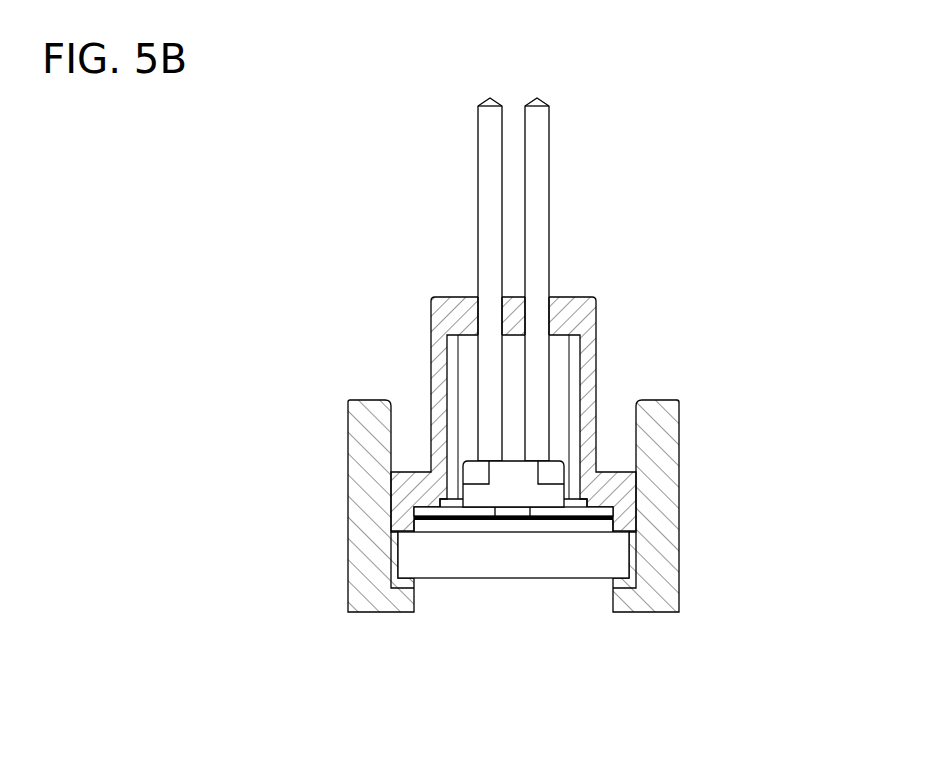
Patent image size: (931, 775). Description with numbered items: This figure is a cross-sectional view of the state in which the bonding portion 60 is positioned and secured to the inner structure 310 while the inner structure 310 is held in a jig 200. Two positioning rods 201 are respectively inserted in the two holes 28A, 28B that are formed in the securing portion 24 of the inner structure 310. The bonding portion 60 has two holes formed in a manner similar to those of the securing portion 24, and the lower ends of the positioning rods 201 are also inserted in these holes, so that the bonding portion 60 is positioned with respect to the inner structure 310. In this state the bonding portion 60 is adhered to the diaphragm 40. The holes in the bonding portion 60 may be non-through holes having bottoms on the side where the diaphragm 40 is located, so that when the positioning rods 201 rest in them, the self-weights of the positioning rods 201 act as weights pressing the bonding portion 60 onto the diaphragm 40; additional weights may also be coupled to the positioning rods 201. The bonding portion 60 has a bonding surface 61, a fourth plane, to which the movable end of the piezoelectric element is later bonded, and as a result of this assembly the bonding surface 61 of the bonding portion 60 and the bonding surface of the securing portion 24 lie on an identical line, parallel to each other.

The jig 200 is at (672, 462).
The inner structure 310 is at (553, 347).
The securing portion 24 is at (432, 323).
The positioning rods 201 is at (487, 203).
The hole 28A is at (478, 317).
The hole 28B is at (549, 317).
The diaphragm 40 is at (572, 522).
The bonding portion 60 is at (482, 493).
The bonding surface 61 is at (525, 473).